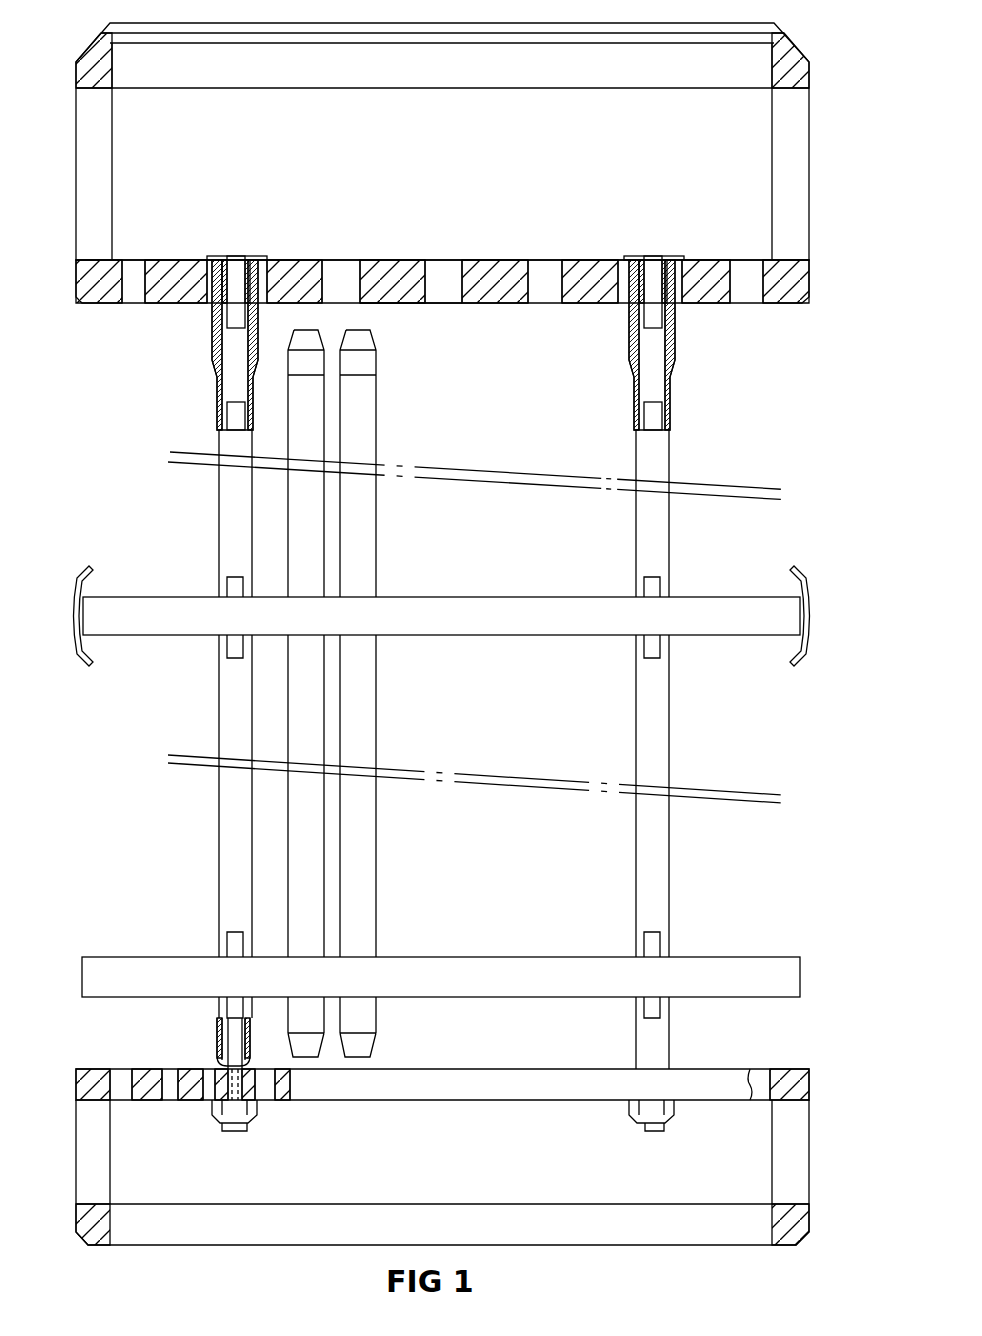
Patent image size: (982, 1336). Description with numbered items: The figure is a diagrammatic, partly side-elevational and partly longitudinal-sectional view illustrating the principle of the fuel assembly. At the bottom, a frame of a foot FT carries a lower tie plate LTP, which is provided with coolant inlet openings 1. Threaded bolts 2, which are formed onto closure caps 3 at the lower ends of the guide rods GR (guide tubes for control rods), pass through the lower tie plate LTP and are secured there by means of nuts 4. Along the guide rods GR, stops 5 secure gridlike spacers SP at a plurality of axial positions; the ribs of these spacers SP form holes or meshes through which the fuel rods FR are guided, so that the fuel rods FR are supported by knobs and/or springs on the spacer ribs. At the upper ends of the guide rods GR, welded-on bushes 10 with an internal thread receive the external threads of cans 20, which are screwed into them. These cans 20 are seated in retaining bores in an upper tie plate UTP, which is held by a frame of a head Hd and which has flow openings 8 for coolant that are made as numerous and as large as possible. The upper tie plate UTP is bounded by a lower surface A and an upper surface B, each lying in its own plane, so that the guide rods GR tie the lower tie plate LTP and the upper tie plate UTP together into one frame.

The head Hd is at (803, 79).
The upper tie plate UTP is at (798, 284).
The upper surface of the upper tie plate B is at (374, 260).
The flow openings 8 is at (612, 260).
The lower surface of the upper tie plate A is at (410, 305).
The cans 20 is at (244, 257).
The bushes 10 is at (213, 347).
The guide rods GR is at (220, 857).
The stops 5 is at (230, 585).
The fuel rods FR is at (377, 662).
The spacers SP is at (770, 626).
The closure caps 3 is at (218, 1039).
The threaded bolts 2 is at (232, 1128).
The lower tie plate LTP is at (784, 1072).
The coolant inlet openings 1 is at (140, 1102).
The nuts 4 is at (258, 1111).
The foot FT is at (808, 1228).